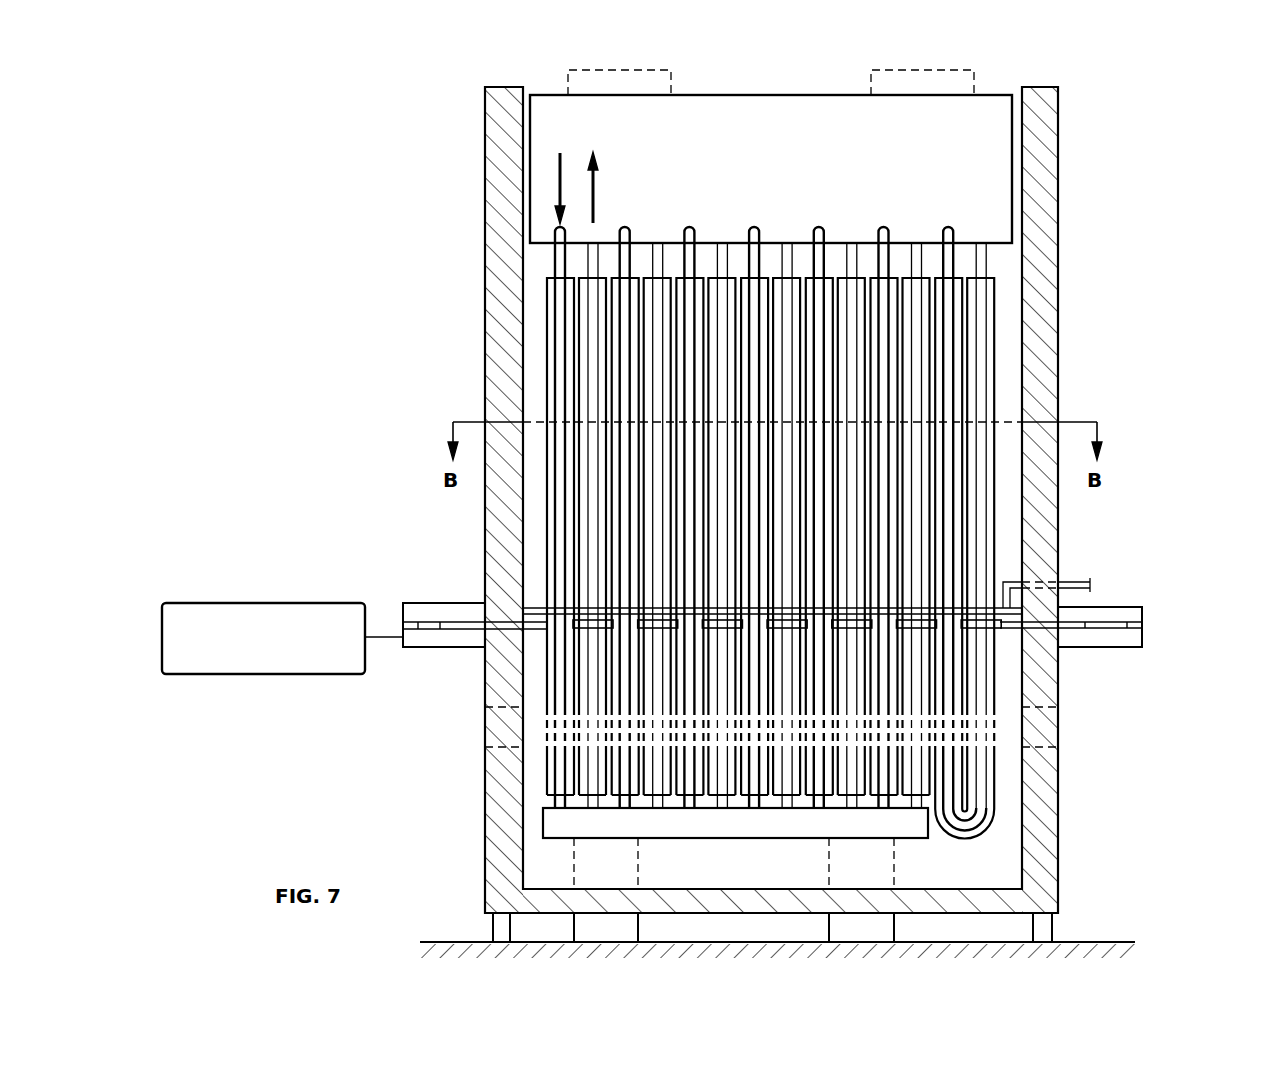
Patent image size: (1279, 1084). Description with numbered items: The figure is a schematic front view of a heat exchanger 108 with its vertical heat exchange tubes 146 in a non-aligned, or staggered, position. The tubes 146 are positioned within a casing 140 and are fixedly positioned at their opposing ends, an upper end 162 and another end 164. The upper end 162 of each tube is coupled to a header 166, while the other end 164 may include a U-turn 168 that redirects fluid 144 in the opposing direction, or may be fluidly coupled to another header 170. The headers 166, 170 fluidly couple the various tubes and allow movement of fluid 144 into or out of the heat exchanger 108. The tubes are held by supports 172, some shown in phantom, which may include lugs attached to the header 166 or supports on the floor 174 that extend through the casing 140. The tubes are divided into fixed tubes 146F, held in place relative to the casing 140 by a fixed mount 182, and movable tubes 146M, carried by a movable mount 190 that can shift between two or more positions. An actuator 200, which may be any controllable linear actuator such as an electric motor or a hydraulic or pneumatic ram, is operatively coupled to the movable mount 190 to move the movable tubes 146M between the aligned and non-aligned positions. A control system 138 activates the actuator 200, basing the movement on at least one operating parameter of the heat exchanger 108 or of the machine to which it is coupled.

The heat exchanger 108 is at (1072, 92).
The control system 138 is at (282, 638).
The casing 140 is at (1040, 262).
The fluid 144 is at (563, 178).
The heat exchange tubes 146 is at (907, 360).
The fixed heat exchange tubes 146F is at (818, 545).
The movable heat exchange tubes 146M is at (797, 660).
The upper end 162 is at (536, 262).
The end 164 is at (536, 783).
The header 166 is at (965, 155).
The U-turn 168 is at (991, 785).
The header 170 is at (553, 822).
The supports 172 is at (650, 72).
The floor 174 is at (1100, 940).
The fixed mount 182 is at (1090, 586).
The movable mount 190 is at (1008, 642).
The actuator 200 is at (432, 638).